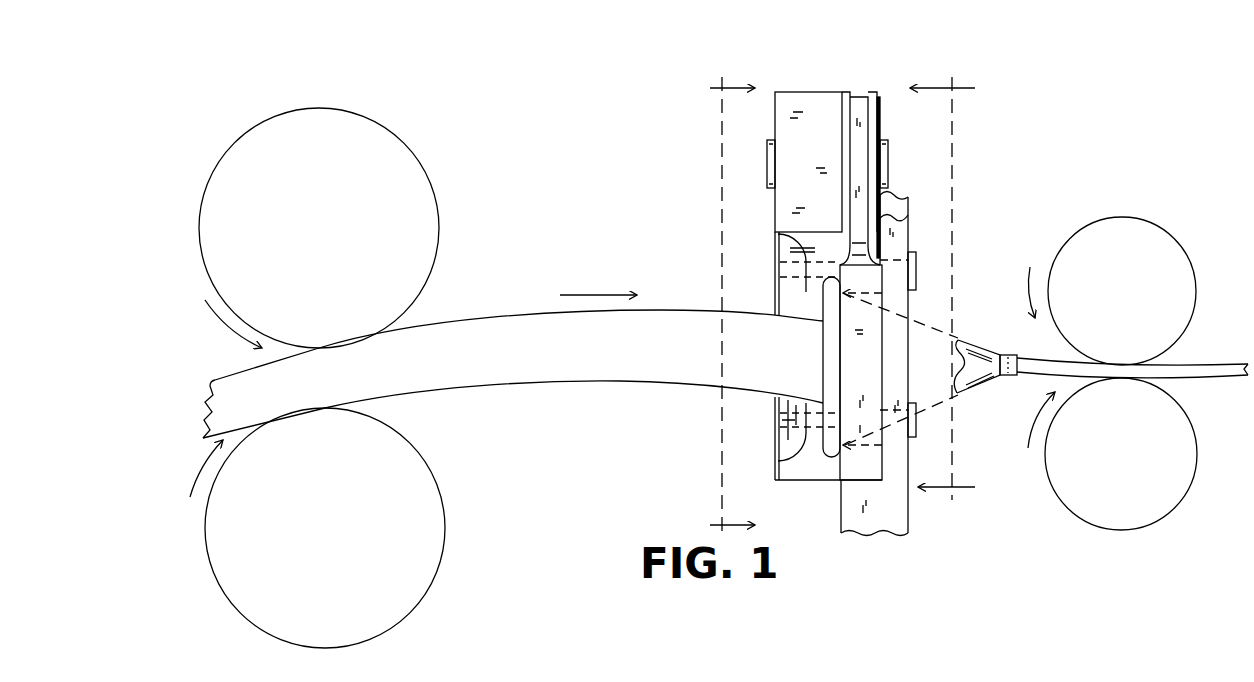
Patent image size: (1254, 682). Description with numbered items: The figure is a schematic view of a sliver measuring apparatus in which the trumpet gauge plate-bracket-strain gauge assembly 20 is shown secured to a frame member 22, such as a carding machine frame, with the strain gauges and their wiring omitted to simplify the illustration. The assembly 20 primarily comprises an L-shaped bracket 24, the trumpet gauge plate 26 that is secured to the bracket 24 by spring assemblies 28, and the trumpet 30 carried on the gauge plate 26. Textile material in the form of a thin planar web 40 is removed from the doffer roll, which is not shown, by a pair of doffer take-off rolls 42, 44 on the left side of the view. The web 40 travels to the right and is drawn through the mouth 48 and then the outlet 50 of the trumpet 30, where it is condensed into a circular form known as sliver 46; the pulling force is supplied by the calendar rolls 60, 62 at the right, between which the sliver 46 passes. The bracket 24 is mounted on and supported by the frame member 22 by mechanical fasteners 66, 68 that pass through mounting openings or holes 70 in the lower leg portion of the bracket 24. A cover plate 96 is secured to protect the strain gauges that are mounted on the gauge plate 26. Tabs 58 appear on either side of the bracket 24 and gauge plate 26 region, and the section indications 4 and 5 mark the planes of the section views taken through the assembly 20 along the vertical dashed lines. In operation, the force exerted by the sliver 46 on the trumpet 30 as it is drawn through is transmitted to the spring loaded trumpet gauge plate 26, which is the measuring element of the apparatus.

The trumpet gauge plate-bracket-strain gauge assembly 20 is at (884, 70).
The frame member 22 is at (843, 505).
The L-shaped bracket 24 is at (816, 86).
The trumpet gauge plate 26 is at (866, 86).
The spring assemblies 28 is at (900, 161).
The trumpet 30 is at (823, 347).
The thin planar web 40 is at (576, 384).
The doffer take-off roll 42 is at (435, 190).
The doffer take-off roll 44 is at (437, 483).
The sliver 46 is at (1205, 363).
The mouth 48 is at (820, 368).
The outlet 50 is at (1012, 355).
The mounting tabs 58 is at (768, 150).
The calendar roll 60 is at (1164, 231).
The calendar roll 62 is at (1194, 478).
The mechanical fastener 66 is at (911, 288).
The mechanical fastener 68 is at (911, 433).
The mounting openings 70 is at (773, 238).
The cover plate 96 is at (909, 212).
The section line 4- 4 is at (723, 307).
The section line 5- 5 is at (945, 288).